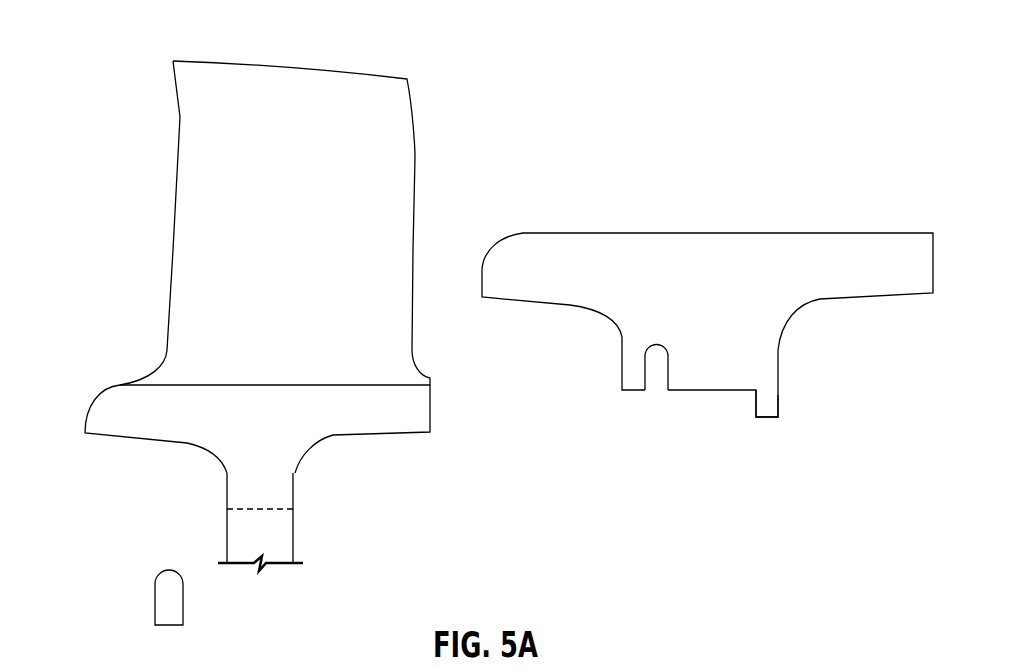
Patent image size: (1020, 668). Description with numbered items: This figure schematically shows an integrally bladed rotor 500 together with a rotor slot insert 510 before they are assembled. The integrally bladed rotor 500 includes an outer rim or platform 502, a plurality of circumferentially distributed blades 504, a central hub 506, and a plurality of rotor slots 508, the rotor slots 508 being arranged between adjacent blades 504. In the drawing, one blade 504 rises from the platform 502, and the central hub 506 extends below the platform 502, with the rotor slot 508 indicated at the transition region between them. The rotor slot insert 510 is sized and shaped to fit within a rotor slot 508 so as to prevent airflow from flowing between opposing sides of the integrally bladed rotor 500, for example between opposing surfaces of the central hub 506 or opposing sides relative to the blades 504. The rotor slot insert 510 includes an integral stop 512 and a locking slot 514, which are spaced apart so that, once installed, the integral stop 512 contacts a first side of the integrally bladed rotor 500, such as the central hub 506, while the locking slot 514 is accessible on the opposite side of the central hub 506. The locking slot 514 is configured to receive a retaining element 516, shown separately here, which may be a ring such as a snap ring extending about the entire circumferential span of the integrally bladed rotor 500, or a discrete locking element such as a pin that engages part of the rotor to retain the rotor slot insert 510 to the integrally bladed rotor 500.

The integrally bladed rotor 500 is at (136, 92).
The platform 502 is at (105, 425).
The blades 504 is at (395, 173).
The central hub 506 is at (275, 532).
The rotor slots 508 is at (238, 485).
The rotor slot insert 510 is at (827, 262).
The integral stop 512 is at (765, 405).
The locking slot 514 is at (657, 403).
The retaining element 516 is at (170, 593).